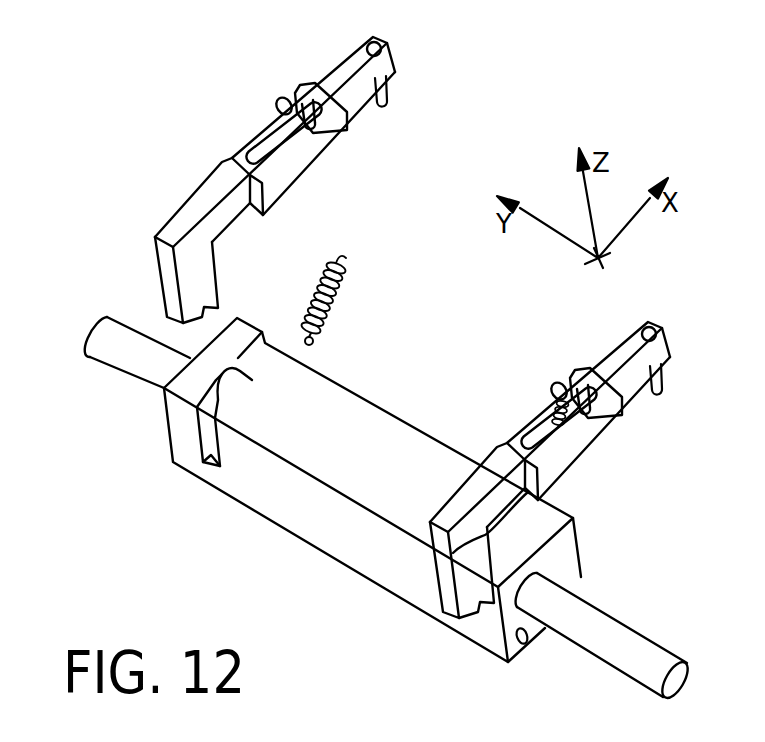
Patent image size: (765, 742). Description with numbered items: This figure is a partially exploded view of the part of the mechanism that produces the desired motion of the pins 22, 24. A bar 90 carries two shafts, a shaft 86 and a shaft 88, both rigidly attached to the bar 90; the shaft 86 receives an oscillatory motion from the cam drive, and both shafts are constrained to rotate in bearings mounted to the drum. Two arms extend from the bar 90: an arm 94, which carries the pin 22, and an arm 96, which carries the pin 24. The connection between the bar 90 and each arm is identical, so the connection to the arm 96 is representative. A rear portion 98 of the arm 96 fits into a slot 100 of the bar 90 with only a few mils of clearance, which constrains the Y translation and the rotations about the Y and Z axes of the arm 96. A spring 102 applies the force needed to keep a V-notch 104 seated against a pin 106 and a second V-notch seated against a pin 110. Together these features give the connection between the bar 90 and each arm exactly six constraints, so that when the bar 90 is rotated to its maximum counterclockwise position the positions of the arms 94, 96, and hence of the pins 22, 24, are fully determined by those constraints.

The pin 22 is at (664, 393).
The pin 24 is at (392, 98).
The shaft 86 is at (628, 626).
The shaft 88 is at (104, 357).
The bar 90 is at (294, 540).
The arm 94 is at (578, 464).
The arm 96 is at (190, 213).
The rear portion 98 is at (148, 272).
The slot 100 is at (205, 441).
The spring 102 is at (343, 268).
The V-notch 104 is at (187, 327).
The pin 106 is at (522, 656).
The pin 110 is at (315, 343).